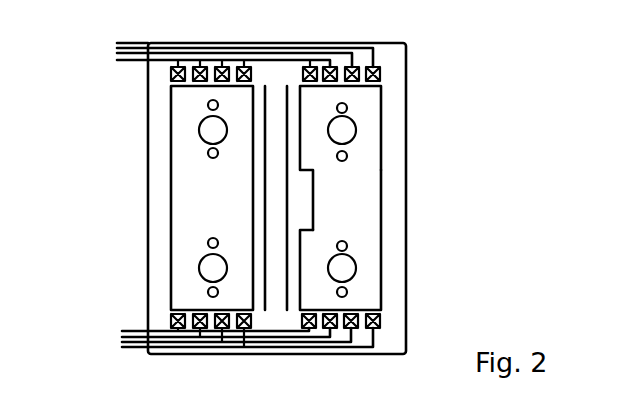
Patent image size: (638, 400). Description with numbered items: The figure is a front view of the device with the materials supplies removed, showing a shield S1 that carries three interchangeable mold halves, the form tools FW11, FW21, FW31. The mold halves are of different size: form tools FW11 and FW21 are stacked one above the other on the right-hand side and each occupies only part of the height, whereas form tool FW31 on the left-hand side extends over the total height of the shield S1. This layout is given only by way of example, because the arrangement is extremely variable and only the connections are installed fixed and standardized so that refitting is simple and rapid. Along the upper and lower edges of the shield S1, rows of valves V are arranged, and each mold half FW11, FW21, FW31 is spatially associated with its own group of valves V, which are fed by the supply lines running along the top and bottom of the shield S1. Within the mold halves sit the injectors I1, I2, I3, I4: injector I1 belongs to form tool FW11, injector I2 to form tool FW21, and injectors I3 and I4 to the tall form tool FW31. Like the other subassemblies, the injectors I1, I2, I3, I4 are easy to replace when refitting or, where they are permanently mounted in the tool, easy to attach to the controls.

The shield S1 is at (395, 80).
The valves V is at (376, 68).
The form tool FW31 is at (190, 191).
The form tool FW11 is at (370, 140).
The form tool FW21 is at (368, 251).
The injector I1 is at (345, 133).
The injector I2 is at (348, 272).
The injector I3 is at (213, 130).
The injector I4 is at (213, 268).